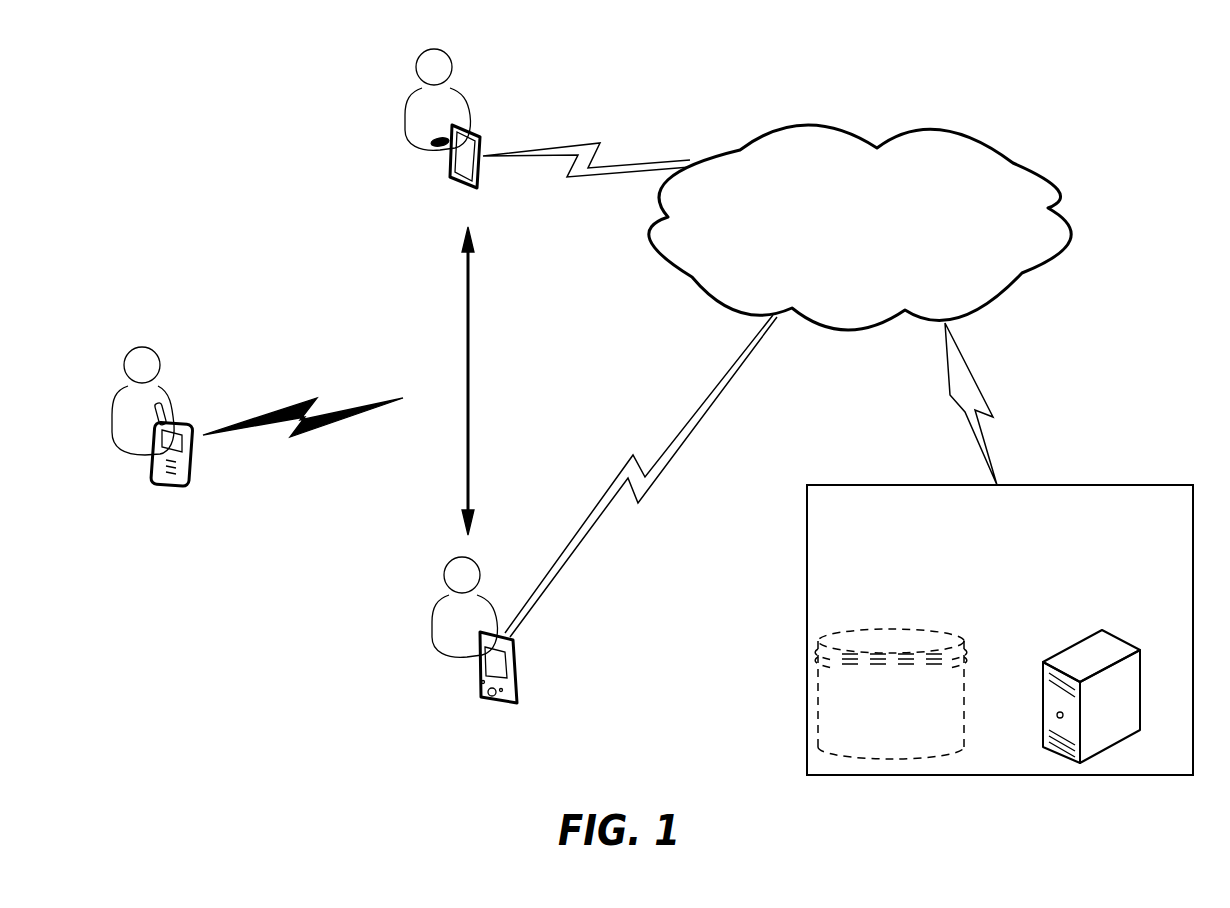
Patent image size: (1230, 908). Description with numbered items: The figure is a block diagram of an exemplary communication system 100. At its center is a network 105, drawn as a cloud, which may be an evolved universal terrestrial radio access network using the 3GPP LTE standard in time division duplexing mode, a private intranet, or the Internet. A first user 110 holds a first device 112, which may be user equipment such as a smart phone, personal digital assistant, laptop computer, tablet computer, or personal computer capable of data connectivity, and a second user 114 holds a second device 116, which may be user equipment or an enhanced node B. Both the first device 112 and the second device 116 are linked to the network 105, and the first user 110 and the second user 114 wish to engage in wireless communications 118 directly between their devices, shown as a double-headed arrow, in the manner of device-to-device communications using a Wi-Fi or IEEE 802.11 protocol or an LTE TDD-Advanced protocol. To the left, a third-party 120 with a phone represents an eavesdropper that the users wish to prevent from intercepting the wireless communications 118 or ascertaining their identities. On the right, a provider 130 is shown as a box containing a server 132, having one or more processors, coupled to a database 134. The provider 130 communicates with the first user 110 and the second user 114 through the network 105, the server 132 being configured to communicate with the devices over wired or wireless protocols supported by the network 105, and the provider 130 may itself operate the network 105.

The communication system 100 is at (181, 69).
The network 105 is at (762, 133).
The first user 110 is at (440, 650).
The first device 112 is at (488, 700).
The second user 114 is at (405, 103).
The second device 116 is at (458, 180).
The wireless communications 118 is at (470, 345).
The third-party 120 is at (132, 452).
The provider 130 is at (1140, 485).
The server 132 is at (1110, 637).
The database 134 is at (933, 632).